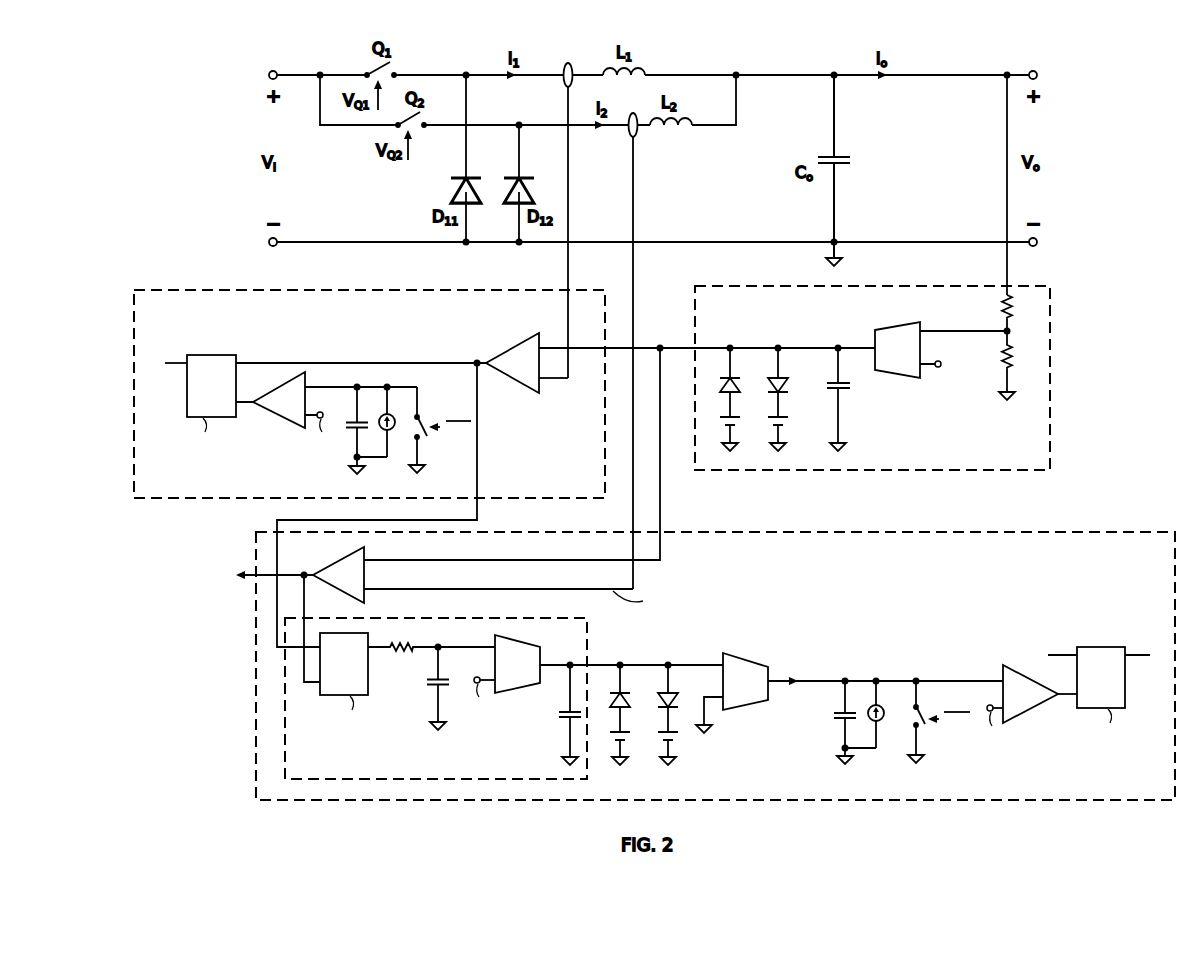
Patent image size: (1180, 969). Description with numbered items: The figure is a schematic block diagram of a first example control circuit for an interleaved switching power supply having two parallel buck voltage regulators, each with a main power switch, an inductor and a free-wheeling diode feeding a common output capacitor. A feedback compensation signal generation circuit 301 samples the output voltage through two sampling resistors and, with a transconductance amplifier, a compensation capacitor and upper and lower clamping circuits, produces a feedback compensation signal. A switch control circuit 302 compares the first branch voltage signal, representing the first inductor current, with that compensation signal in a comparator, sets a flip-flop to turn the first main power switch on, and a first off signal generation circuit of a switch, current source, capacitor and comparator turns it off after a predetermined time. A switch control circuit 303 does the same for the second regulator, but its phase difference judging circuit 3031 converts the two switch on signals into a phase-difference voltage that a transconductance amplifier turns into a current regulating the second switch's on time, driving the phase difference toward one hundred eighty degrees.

The feedback compensation signal generation circuit 301 is at (1036, 461).
The switch control circuit 302 is at (178, 491).
The switch control circuit 303 is at (1166, 795).
The phase difference judging circuit 3031 is at (336, 775).